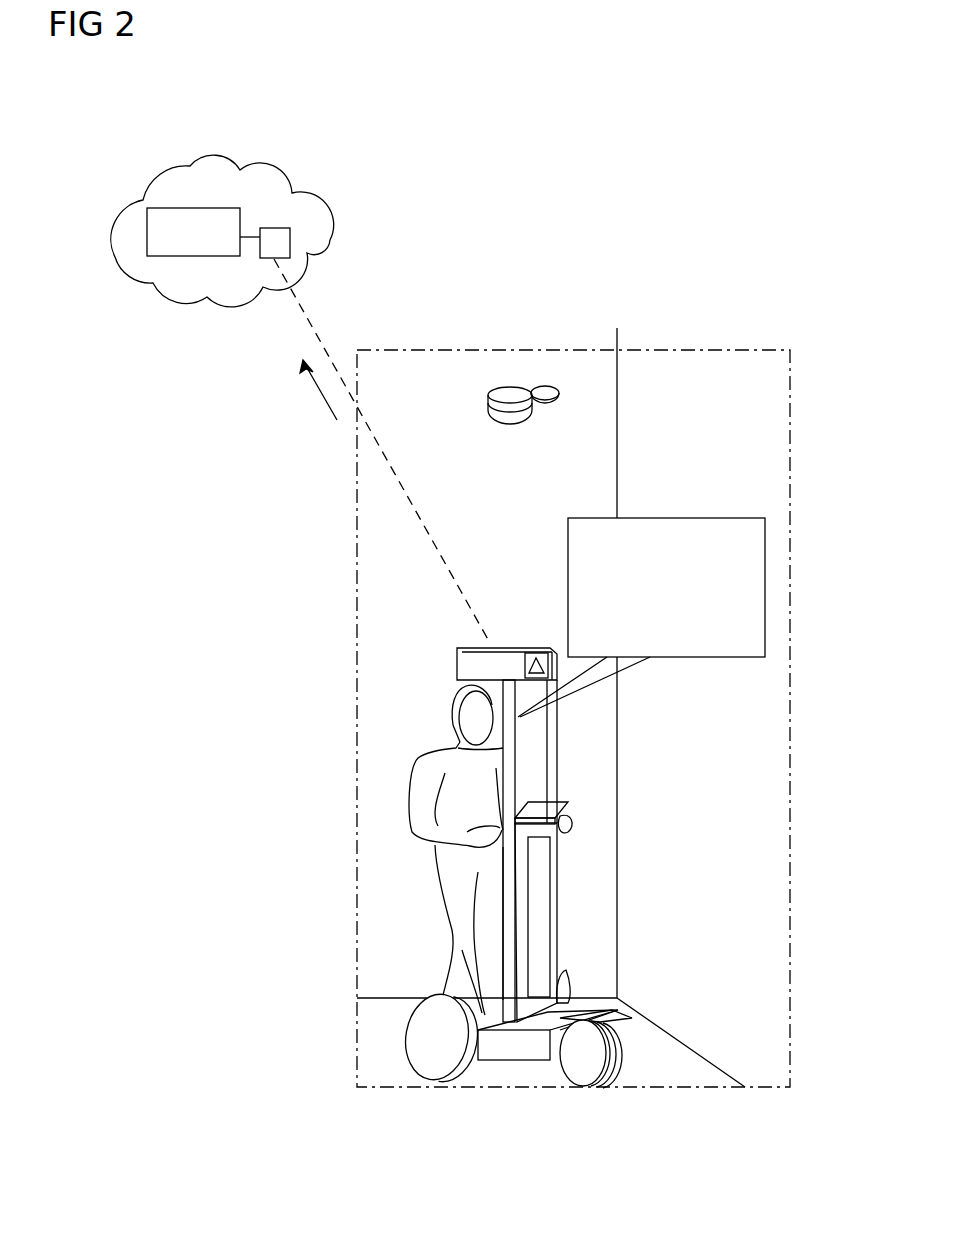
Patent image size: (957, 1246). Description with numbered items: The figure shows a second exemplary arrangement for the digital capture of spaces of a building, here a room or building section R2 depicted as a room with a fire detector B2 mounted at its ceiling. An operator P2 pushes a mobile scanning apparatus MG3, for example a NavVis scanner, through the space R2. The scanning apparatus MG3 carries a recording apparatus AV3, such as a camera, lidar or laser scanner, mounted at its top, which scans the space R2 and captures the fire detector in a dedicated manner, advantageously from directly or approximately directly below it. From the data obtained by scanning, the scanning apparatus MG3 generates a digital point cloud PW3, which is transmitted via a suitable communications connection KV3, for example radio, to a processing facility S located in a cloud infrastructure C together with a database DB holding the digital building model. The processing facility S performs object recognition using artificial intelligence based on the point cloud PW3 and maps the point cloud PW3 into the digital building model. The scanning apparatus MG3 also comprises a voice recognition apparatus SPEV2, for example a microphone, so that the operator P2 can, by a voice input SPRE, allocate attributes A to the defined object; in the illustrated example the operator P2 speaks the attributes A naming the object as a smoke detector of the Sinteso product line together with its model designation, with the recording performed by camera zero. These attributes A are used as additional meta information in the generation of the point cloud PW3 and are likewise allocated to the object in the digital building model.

The building section R2 is at (680, 372).
The cloud infrastructure C is at (172, 287).
The database (building information model) DB is at (193, 218).
The processing facility S is at (280, 243).
The communications connection KV3 is at (308, 316).
The digital point cloud PW3 is at (320, 393).
The smoke detector B2 is at (512, 388).
The voice input SPRE is at (699, 616).
The attributes A is at (740, 637).
The recording apparatus AV3 is at (536, 647).
The mobile scanning apparatus MG3 is at (540, 915).
The voice recognition apparatus SPEV2 is at (548, 815).
The operator P2 is at (420, 780).